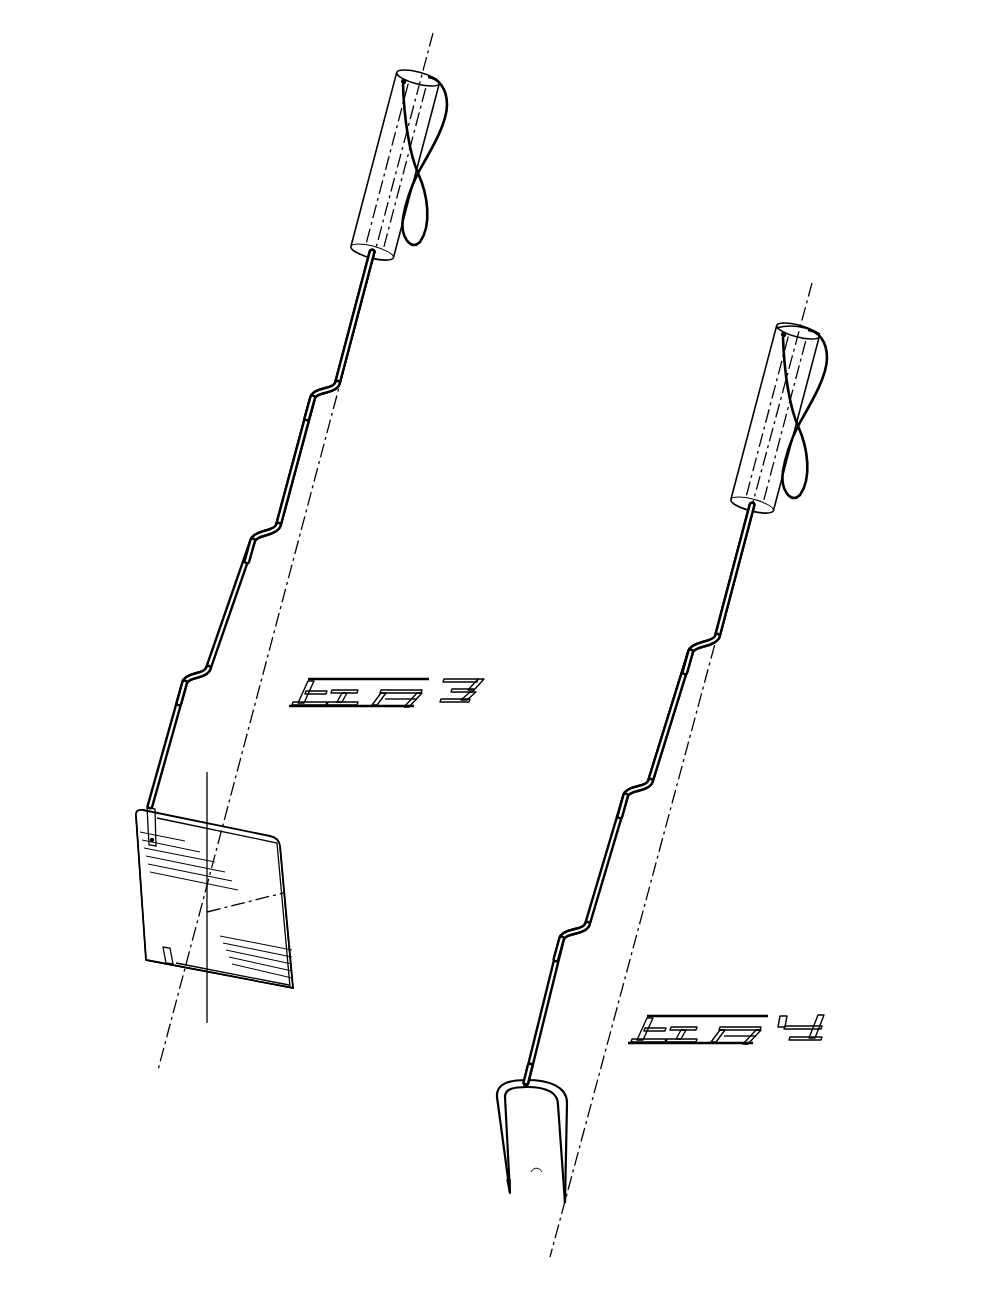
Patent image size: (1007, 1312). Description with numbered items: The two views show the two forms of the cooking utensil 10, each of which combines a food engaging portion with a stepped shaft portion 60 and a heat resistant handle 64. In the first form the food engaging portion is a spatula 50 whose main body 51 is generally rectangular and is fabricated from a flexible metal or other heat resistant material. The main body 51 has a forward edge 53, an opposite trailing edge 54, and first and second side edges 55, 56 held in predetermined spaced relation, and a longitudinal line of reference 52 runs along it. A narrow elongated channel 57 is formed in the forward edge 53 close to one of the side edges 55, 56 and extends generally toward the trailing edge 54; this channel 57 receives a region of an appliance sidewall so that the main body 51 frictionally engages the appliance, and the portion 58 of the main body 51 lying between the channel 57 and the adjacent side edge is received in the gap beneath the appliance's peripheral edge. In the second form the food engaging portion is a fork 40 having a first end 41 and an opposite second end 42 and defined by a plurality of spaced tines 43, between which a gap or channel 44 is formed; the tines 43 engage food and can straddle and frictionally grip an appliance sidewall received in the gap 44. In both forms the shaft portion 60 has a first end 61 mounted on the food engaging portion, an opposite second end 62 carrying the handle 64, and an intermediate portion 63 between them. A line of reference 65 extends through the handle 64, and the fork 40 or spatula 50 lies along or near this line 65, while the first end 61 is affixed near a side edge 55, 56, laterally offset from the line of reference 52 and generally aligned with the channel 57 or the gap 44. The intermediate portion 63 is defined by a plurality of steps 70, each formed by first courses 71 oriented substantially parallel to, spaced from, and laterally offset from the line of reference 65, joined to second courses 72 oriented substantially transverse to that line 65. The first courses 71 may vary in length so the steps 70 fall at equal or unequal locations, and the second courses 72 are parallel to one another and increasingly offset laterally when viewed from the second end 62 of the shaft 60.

In FIG. 3, the cooking utensil 10 is at (432, 426).
In FIG. 4, the cooking utensil 10 is at (799, 708).
In FIG. 4, the fork 40 is at (482, 1140).
In FIG. 4, the first end 41 is at (508, 1194).
In FIG. 4, the second end 42 is at (815, 327).
In FIG. 4, the tines 43 is at (562, 1133).
In FIG. 4, the gap or channel 44 is at (546, 1178).
In FIG. 3, the spatula 50 is at (197, 840).
In FIG. 3, the main body 51 is at (253, 850).
In FIG. 3, the line of reference 52 is at (291, 886).
In FIG. 3, the forward edge 53 is at (264, 990).
In FIG. 3, the trailing edge 54 is at (238, 823).
In FIG. 3, the first side edge 55 is at (295, 955).
In FIG. 3, the second side edge 56 is at (140, 896).
In FIG. 3, the elongated channel 57 is at (222, 974).
In FIG. 3, the portion of the main body 58 is at (162, 958).
In FIG. 3, the shaft portion 60 is at (238, 580).
In FIG. 4, the shaft portion 60 is at (608, 887).
In FIG. 3, the first end 61 is at (147, 805).
In FIG. 4, the first end 61 is at (524, 1067).
In FIG. 3, the second end 62 is at (378, 282).
In FIG. 4, the second end 62 is at (758, 532).
In FIG. 3, the intermediate portion 63 is at (300, 466).
In FIG. 4, the intermediate portion 63 is at (673, 715).
In FIG. 3, the heat resistant handle 64 is at (382, 190).
In FIG. 4, the heat resistant handle 64 is at (752, 436).
In FIG. 3, the line of reference 65 is at (434, 56).
In FIG. 4, the line of reference 65 is at (802, 298).
In FIG. 3, the steps 70 is at (262, 513).
In FIG. 4, the steps 70 is at (640, 765).
In FIG. 3, the first courses 71 is at (350, 368).
In FIG. 4, the first courses 71 is at (730, 610).
In FIG. 3, the second courses 72 is at (272, 540).
In FIG. 4, the second courses 72 is at (705, 652).